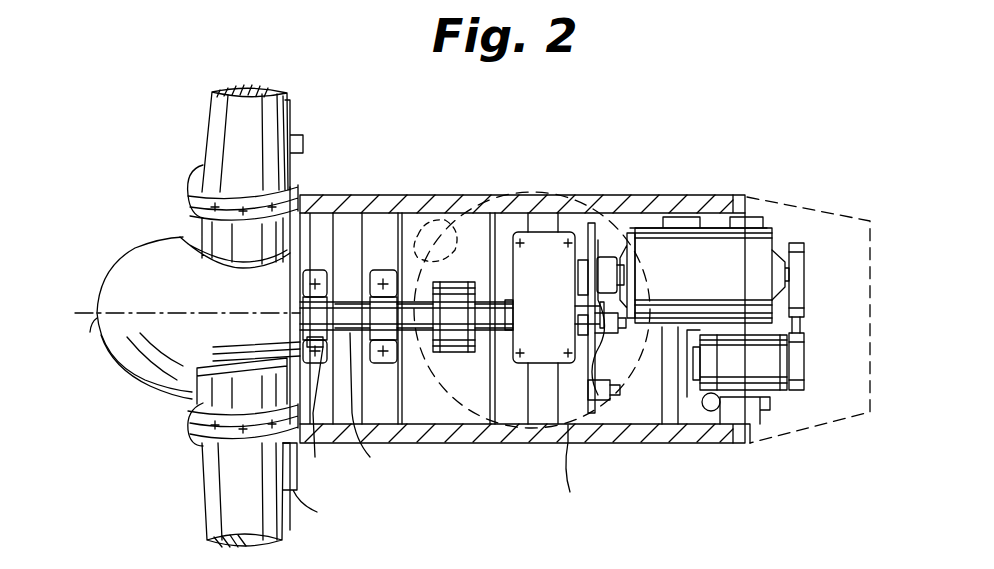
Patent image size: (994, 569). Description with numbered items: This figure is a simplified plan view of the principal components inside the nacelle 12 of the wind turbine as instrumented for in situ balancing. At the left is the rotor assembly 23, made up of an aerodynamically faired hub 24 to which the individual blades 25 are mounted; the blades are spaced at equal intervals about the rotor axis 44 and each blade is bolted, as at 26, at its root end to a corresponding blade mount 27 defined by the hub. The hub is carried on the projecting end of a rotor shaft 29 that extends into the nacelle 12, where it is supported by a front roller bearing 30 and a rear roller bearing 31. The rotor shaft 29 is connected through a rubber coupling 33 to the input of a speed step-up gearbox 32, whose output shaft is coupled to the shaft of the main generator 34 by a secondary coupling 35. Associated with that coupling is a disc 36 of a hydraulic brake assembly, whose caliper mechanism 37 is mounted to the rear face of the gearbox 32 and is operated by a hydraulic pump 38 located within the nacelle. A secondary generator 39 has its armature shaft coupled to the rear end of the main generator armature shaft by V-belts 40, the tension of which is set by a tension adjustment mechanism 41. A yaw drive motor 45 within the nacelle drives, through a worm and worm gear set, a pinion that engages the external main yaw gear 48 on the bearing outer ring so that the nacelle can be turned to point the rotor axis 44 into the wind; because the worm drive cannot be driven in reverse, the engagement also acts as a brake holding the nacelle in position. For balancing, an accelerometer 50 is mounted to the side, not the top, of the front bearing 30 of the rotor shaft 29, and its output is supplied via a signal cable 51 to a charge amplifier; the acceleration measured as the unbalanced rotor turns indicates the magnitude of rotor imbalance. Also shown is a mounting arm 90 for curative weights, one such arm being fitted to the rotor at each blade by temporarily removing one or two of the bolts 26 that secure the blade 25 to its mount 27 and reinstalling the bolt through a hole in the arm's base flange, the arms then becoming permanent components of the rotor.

The nacelle 12 is at (637, 444).
The rotor assembly 23 is at (158, 204).
The hub 24 is at (130, 272).
The blade 25 is at (210, 118).
The bolt 26 is at (199, 180).
The blade mount 27 is at (197, 222).
The rotor shaft 29 is at (358, 442).
The front roller bearing 30 is at (318, 270).
The rear roller bearing 31 is at (390, 270).
The speed step-up gearbox 32 is at (546, 255).
The rubber coupling 33 is at (465, 281).
The main generator 34 is at (705, 250).
The secondary coupling 35 is at (617, 262).
The disc 36 is at (597, 245).
The caliper mechanism 37 is at (585, 379).
The hydraulic pump 38 is at (598, 425).
The secondary generator 39 is at (750, 443).
The V-belts 40 is at (800, 392).
The tension adjustment mechanism 41 is at (707, 443).
The rotor axis 44 is at (96, 322).
The yaw drive motor 45 is at (426, 215).
The main yaw gear 48 is at (497, 445).
The accelerometer 50 is at (303, 341).
The signal cable 51 is at (320, 447).
The mounting arm 90 is at (304, 148).